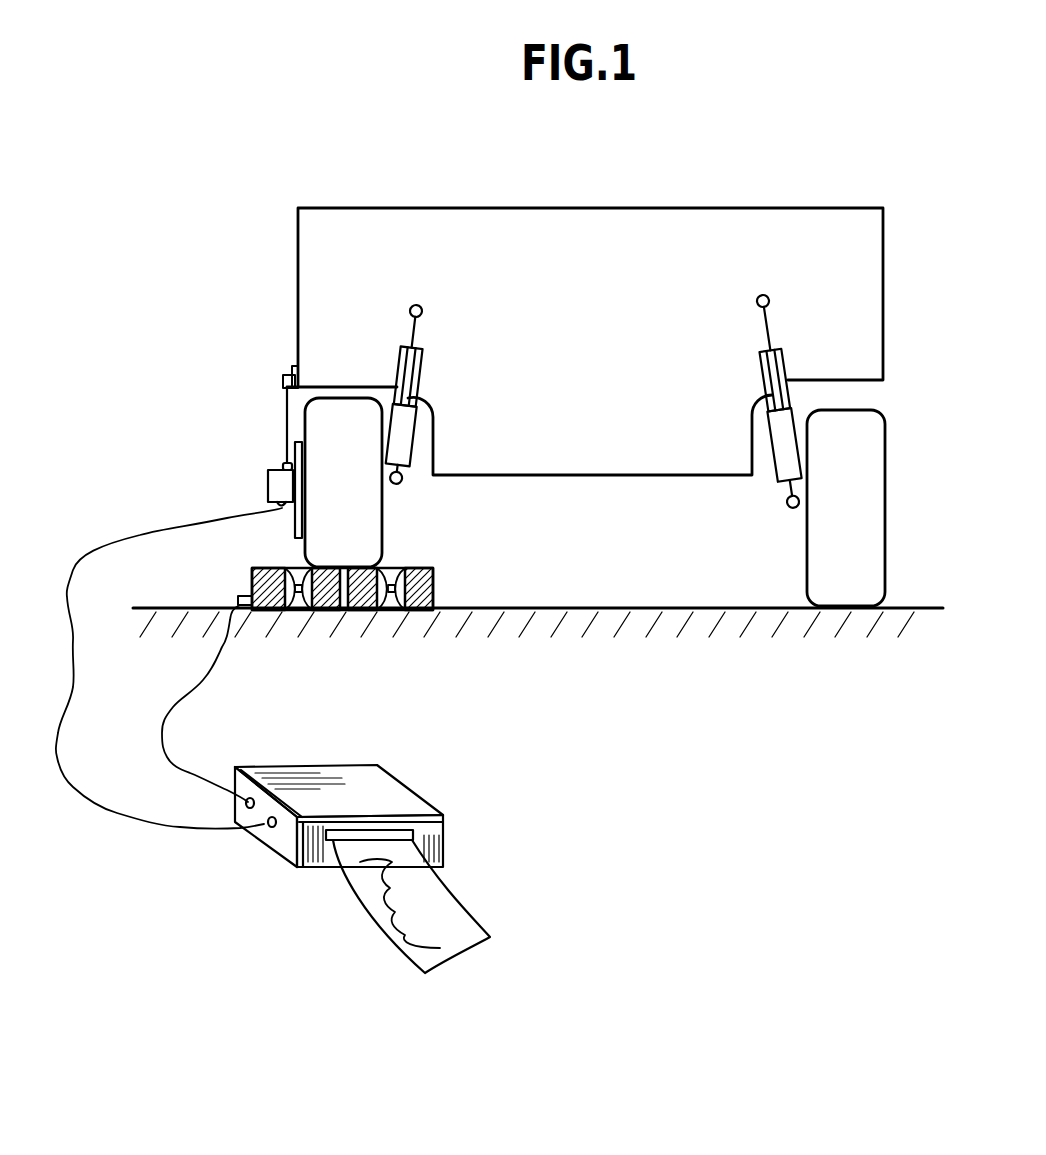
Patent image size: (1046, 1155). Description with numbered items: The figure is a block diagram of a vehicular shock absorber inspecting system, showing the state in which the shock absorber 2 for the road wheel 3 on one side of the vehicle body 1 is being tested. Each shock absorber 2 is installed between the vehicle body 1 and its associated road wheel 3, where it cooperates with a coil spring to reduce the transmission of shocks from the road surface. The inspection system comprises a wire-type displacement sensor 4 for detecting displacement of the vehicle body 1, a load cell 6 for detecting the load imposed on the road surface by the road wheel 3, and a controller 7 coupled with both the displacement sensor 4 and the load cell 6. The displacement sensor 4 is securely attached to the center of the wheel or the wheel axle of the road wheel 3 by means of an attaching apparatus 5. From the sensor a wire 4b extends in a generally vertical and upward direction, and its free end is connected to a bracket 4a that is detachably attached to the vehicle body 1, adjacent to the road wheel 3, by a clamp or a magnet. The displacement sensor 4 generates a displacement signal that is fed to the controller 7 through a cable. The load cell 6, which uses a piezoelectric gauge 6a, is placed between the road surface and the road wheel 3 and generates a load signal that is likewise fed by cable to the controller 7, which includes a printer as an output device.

The vehicle body 1 is at (311, 251).
The shock absorber 2 is at (420, 370).
The road wheel 3 is at (372, 525).
The displacement sensor 4 is at (270, 480).
The bracket 4a is at (293, 370).
The wire 4b is at (287, 420).
The attaching apparatus 5 is at (282, 533).
The load cell 6 is at (433, 586).
The piezoelectric gauge 6a is at (392, 596).
The controller 7 is at (400, 797).